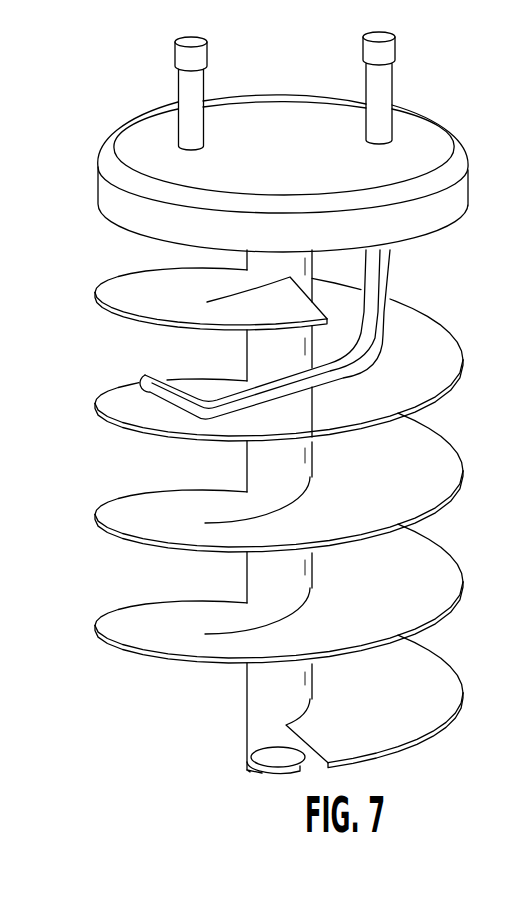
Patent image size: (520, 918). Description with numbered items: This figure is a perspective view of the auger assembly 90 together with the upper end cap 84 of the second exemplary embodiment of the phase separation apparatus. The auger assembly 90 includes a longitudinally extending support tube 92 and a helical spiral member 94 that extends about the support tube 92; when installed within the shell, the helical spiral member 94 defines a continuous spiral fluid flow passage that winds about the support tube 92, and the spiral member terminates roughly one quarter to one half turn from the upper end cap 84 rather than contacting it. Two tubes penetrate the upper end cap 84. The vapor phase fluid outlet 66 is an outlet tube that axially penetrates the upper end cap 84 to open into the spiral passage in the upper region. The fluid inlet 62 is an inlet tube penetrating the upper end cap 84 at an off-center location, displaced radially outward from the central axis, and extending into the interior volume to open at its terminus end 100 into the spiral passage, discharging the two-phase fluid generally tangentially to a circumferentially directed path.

The fluid inlet 62 is at (392, 75).
The vapor phase fluid outlet 66 is at (204, 77).
The upper end cap 84 is at (418, 122).
The auger assembly 90 is at (430, 287).
The support tube 92 is at (247, 365).
The helical spiral member 94 is at (427, 320).
The terminus end 100 is at (161, 374).